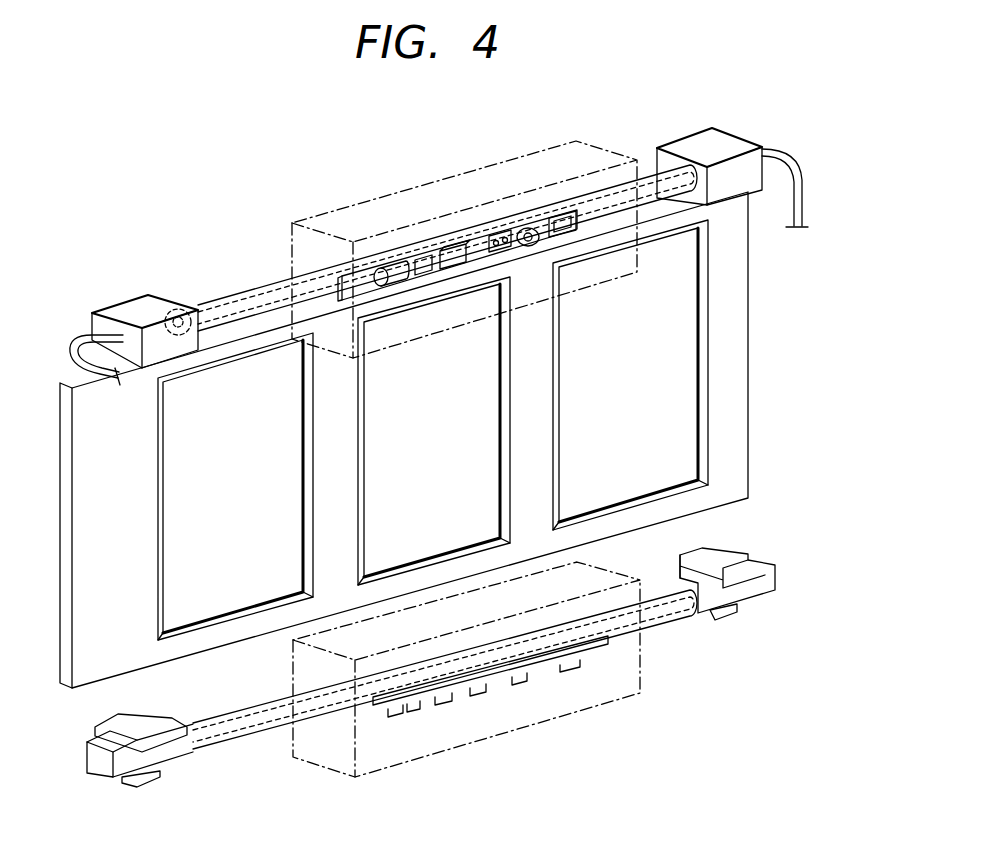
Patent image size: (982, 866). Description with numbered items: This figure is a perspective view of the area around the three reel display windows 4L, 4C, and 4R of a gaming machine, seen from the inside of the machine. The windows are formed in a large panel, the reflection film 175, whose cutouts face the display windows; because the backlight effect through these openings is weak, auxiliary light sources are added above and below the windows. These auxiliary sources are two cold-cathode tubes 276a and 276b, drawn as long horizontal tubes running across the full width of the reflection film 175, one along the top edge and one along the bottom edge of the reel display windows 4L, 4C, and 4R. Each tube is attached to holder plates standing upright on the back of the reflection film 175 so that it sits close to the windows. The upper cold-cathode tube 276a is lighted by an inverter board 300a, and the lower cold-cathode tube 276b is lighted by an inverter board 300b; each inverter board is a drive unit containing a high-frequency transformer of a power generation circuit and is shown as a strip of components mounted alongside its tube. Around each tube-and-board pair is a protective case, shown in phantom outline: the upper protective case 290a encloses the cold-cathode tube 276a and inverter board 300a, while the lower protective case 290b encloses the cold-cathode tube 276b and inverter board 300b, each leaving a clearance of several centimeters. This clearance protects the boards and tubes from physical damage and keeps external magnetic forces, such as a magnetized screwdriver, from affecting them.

The reflection film 175 is at (743, 300).
The reel display window 4R is at (258, 443).
The reel display window 4C is at (470, 407).
The reel display window 4L is at (662, 362).
The cold-cathode tube 276a is at (252, 297).
The protective case 290a is at (596, 155).
The inverter board 300a is at (437, 252).
The cold-cathode tube 276b is at (247, 720).
The protective case 290b is at (633, 655).
The inverter board 300b is at (545, 662).